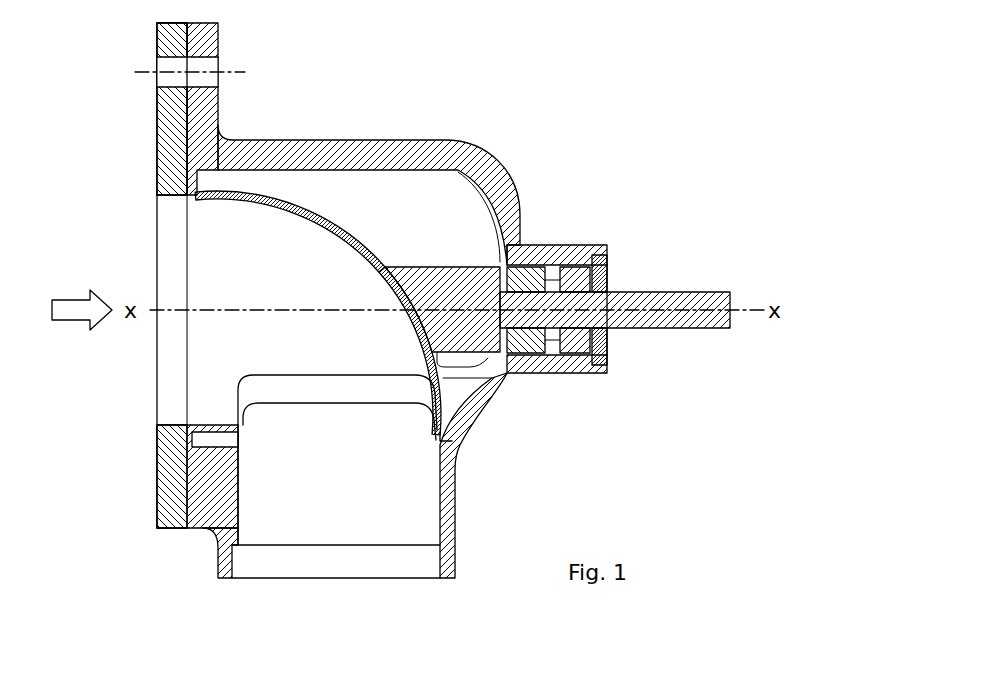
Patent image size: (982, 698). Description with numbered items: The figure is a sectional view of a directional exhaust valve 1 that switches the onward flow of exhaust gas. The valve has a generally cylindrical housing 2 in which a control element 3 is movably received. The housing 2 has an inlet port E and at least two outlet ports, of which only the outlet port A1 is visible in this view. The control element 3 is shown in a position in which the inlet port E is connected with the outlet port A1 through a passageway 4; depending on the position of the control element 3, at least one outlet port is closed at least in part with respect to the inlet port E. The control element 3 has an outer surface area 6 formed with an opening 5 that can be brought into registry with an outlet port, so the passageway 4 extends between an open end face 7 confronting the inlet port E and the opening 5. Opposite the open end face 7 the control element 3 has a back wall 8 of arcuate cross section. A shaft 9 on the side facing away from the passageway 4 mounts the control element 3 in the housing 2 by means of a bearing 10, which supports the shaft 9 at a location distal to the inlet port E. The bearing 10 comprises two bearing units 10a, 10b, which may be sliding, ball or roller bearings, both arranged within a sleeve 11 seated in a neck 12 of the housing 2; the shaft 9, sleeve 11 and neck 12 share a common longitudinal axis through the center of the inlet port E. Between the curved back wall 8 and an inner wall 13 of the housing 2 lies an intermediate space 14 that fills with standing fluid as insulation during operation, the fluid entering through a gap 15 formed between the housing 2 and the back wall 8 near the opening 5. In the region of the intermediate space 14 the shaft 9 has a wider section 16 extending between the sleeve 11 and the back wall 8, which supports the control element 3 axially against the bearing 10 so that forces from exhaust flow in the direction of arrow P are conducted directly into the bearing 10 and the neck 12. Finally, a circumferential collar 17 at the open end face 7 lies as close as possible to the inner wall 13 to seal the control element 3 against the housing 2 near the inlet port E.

The directional exhaust valve 1 is at (574, 108).
The housing 2 is at (376, 140).
The control element 3 is at (383, 290).
The passageway 4 is at (252, 281).
The opening 5 is at (336, 391).
The outer surface area 6 is at (210, 353).
The open end face 7 is at (200, 232).
The back wall 8 is at (323, 236).
The shaft 9 is at (678, 328).
The bearing 10 is at (581, 379).
The bearing unit 10a is at (540, 388).
The bearing unit 10b is at (580, 376).
The sleeve 11 is at (547, 265).
The neck 12 is at (606, 235).
The inner wall 13 is at (426, 172).
The intermediate space 14 is at (481, 418).
The gap 15 is at (437, 441).
The wider section 16 is at (467, 289).
The collar 17 is at (157, 193).
The inlet port E is at (175, 263).
The arrow P is at (71, 310).
The outlet port A1 is at (345, 550).